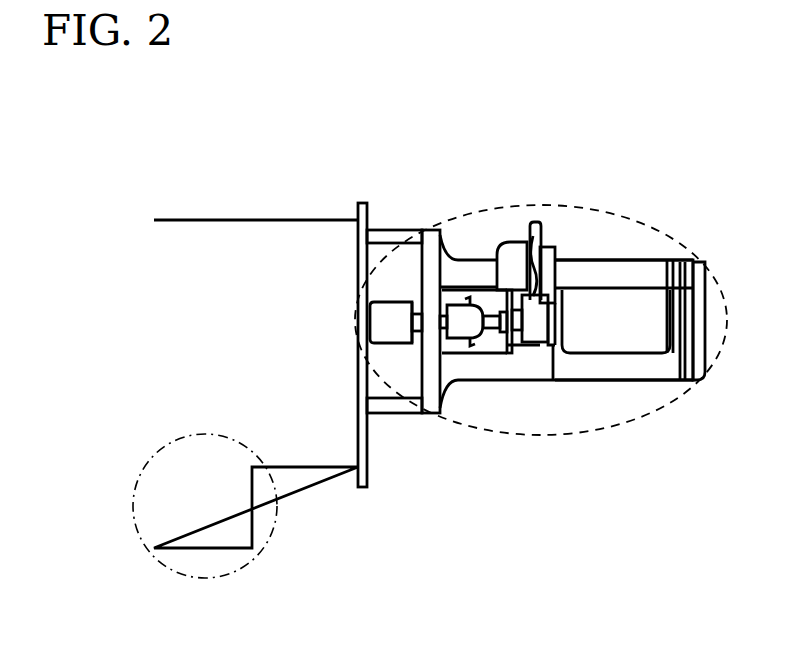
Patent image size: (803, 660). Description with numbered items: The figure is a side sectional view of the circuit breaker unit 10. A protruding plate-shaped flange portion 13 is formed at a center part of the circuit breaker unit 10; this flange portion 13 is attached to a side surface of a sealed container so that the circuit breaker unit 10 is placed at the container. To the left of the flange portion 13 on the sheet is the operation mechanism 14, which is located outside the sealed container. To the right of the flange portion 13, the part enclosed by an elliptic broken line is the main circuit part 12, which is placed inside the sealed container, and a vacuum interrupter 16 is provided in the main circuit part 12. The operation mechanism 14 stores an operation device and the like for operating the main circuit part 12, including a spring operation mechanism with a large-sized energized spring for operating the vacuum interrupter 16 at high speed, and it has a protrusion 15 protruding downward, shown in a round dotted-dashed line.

The circuit breaker unit 10 is at (157, 131).
The main circuit part 12 is at (665, 225).
The flange portion 13 is at (380, 200).
The operation mechanism 14 is at (170, 327).
The protrusion 15 is at (268, 538).
The vacuum interrupter 16 is at (612, 340).